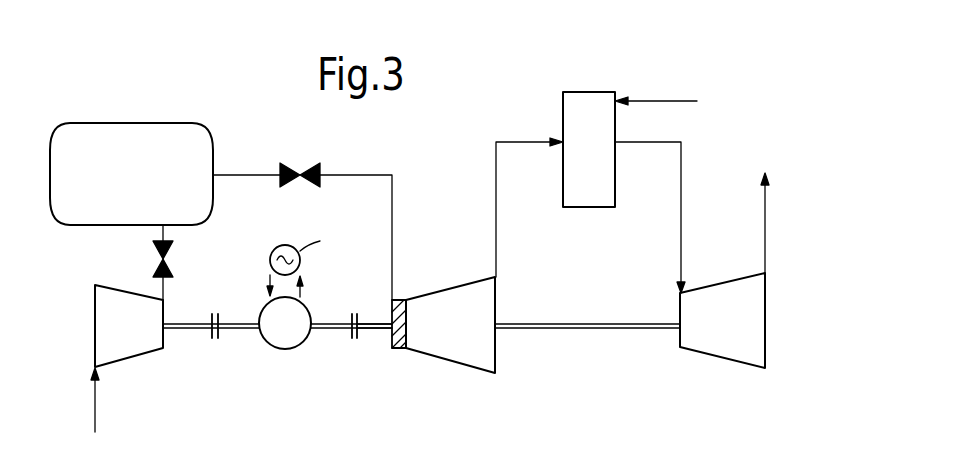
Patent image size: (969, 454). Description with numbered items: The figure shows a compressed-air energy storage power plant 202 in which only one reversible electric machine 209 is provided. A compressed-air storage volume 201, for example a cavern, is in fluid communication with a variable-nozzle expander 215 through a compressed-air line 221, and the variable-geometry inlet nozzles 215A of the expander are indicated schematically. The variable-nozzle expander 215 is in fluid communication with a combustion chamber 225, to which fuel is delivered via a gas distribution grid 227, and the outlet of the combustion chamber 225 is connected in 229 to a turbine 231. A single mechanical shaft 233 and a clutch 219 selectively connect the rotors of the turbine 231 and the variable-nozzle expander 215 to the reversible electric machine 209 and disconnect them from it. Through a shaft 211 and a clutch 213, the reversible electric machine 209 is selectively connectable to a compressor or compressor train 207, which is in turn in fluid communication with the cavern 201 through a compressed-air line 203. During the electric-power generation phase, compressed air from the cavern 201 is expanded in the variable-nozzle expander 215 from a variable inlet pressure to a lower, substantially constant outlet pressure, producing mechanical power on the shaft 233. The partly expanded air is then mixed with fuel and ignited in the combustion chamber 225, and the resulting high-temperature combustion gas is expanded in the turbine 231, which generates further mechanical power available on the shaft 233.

The compressed-air storage volume 201 is at (158, 88).
The CAES power plant 202 is at (494, 86).
The compressed-air line 203 is at (165, 298).
The compressor or compressor train 207 is at (122, 347).
The reversible electric machine 209 is at (284, 340).
The shaft 211 is at (236, 322).
The clutch 213 is at (232, 307).
The variable-nozzle expander 215 is at (438, 317).
The variable-geometry inlet nozzles 215A is at (394, 350).
The clutch 219 is at (358, 318).
The compressed-air line 221 is at (356, 182).
The combustion chamber 225 is at (591, 197).
The gas distribution grid 227 is at (655, 101).
The connection 229 is at (697, 212).
The turbine 231 is at (731, 350).
The mechanical shaft 233 is at (373, 330).